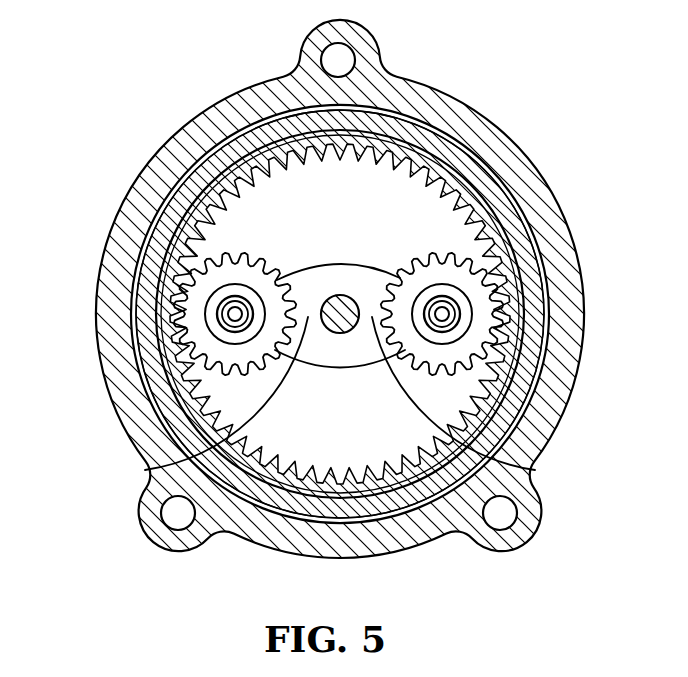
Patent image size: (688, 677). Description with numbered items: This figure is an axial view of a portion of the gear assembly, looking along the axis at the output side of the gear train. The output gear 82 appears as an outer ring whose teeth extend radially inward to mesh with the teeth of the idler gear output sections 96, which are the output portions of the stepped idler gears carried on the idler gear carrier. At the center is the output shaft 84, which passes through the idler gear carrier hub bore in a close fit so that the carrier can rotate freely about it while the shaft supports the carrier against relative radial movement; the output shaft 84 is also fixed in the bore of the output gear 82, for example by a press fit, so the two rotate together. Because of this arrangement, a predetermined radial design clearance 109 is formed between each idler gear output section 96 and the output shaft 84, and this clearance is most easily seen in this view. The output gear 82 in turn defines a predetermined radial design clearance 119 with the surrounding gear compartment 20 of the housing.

The gear compartment 20 is at (193, 172).
The output gear 82 is at (437, 162).
The predetermined radial design clearance 119 is at (480, 195).
The idler gear output section 96 is at (208, 288).
The output shaft 84 is at (343, 308).
The predetermined radial design clearance 109 is at (145, 470).